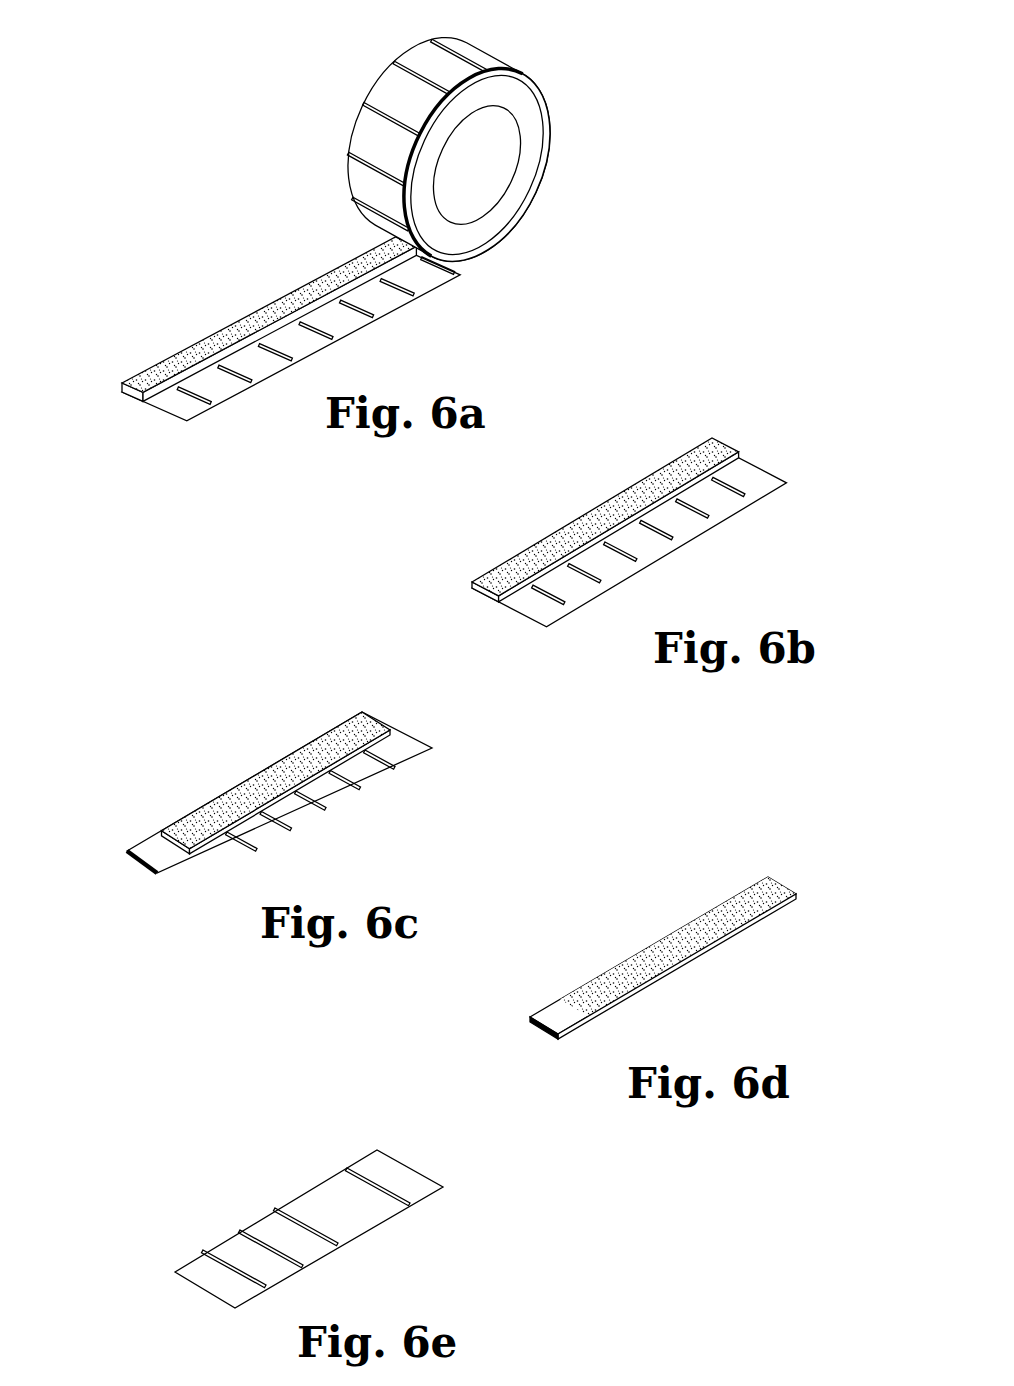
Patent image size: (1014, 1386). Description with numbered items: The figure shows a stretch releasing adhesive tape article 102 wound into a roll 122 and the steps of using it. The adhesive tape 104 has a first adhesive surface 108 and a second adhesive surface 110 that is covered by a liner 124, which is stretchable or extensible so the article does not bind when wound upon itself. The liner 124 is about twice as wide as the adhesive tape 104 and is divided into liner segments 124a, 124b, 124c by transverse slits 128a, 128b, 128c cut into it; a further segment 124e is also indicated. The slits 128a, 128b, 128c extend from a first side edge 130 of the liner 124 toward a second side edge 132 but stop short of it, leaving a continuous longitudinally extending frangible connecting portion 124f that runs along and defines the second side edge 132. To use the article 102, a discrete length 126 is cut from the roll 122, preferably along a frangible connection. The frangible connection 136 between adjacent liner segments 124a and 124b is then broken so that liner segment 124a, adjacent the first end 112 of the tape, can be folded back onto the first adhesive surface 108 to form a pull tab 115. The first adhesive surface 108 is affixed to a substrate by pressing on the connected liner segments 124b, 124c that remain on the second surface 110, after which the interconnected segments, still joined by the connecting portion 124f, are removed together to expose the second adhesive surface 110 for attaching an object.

In FIG. 6a, the stretch releasing adhesive tape article 102 is at (297, 252).
In FIG. 6a, the adhesive tape 104 is at (215, 329).
In FIG. 6b, the adhesive tape 104 is at (571, 527).
In FIG. 6c, the adhesive tape 104 is at (230, 825).
In FIG. 6d, the adhesive tape 104 is at (663, 992).
In FIG. 6a, the first adhesive surface 108 is at (140, 371).
In FIG. 6b, the first adhesive surface 108 is at (523, 557).
In FIG. 6c, the first adhesive surface 108 is at (198, 818).
In FIG. 6a, the second adhesive surface 110 is at (124, 386).
In FIG. 6b, the second adhesive surface 110 is at (472, 590).
In FIG. 6d, the second adhesive surface 110 is at (720, 943).
In FIG. 6a, the first end of the tape 112 is at (152, 398).
In FIG. 6b, the first end of the tape 112 is at (500, 597).
In FIG. 6c, the first end of the tape 112 is at (138, 863).
In FIG. 6c, the pull tab 115 is at (165, 873).
In FIG. 6d, the pull tab 115 is at (570, 1040).
In FIG. 6a, the roll 122 is at (494, 47).
In FIG. 6a, the liner 124 is at (277, 354).
In FIG. 6b, the liner 124 is at (620, 580).
In FIG. 6c, the liner 124 is at (289, 819).
In FIG. 6e, the liner 124 is at (270, 1231).
In FIG. 6a, the liner segment 124a is at (183, 405).
In FIG. 6b, the liner segment 124a is at (542, 610).
In FIG. 6c, the liner segment 124a is at (142, 845).
In FIG. 6e, the liner segment 124a is at (193, 1265).
In FIG. 6a, the liner segment 124b is at (227, 391).
In FIG. 6b, the liner segment 124b is at (577, 587).
In FIG. 6c, the liner segment 124b is at (215, 850).
In FIG. 6e, the liner segment 124b is at (223, 1240).
In FIG. 6a, the liner segment 124c is at (268, 369).
In FIG. 6b, the liner segment 124c is at (608, 567).
In FIG. 6e, the liner segment 124c is at (265, 1223).
In FIG. 6c, the fifth liner segment 124e is at (267, 835).
In FIG. 6a, the frangible connecting portion 124f is at (404, 295).
In FIG. 6b, the frangible connecting portion 124f is at (727, 513).
In FIG. 6e, the frangible connecting portion 124f is at (307, 1267).
In FIG. 6b, the discrete length 126 is at (608, 554).
In FIG. 6a, the transverse slit 128a is at (187, 385).
In FIG. 6b, the transverse slit 128a is at (553, 603).
In FIG. 6e, the transverse slit 128a is at (207, 1252).
In FIG. 6a, the transverse slit 128b is at (231, 363).
In FIG. 6b, the transverse slit 128b is at (610, 585).
In FIG. 6c, the transverse slit 128b is at (257, 845).
In FIG. 6e, the transverse slit 128b is at (247, 1233).
In FIG. 6a, the transverse slit 128c is at (265, 341).
In FIG. 6b, the transverse slit 128c is at (633, 553).
In FIG. 6c, the transverse slit 128c is at (288, 827).
In FIG. 6e, the transverse slit 128c is at (275, 1207).
In FIG. 6e, the first side edge of the liner 130 is at (177, 1273).
In FIG. 6a, the second side edge of the liner 132 is at (204, 421).
In FIG. 6e, the second side edge of the liner 132 is at (240, 1307).
In FIG. 6a, the frangible connection 136 is at (218, 412).
In FIG. 6b, the frangible connection 136 is at (595, 620).